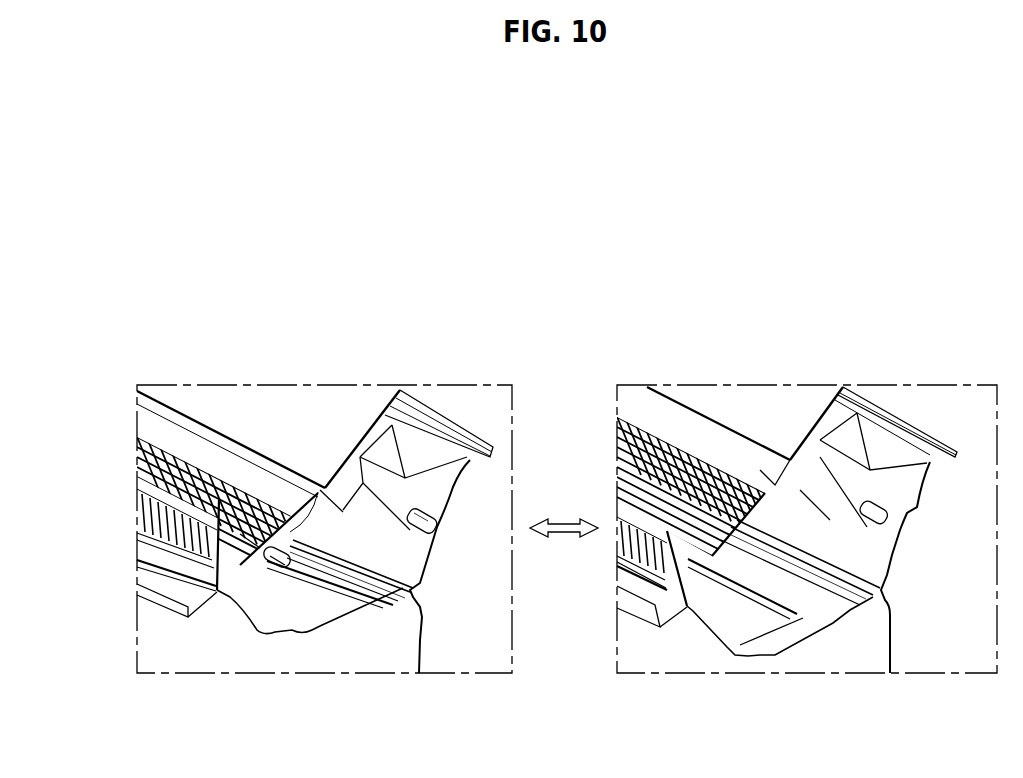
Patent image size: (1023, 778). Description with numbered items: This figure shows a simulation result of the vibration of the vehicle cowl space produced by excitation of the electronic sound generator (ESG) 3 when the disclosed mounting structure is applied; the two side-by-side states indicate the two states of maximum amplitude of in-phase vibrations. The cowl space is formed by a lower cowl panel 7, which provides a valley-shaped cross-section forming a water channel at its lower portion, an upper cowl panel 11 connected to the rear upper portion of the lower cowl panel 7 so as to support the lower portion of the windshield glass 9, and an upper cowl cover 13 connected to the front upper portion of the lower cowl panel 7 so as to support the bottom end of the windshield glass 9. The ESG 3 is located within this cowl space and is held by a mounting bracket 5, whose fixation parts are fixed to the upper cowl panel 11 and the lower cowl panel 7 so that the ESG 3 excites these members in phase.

The electronic sound generator 3 is at (297, 505).
The mounting bracket 5 is at (345, 495).
The lower cowl panel 7 is at (440, 491).
The windshield glass 9 is at (314, 418).
The upper cowl panel 11 is at (402, 446).
The upper cowl cover 13 is at (143, 483).